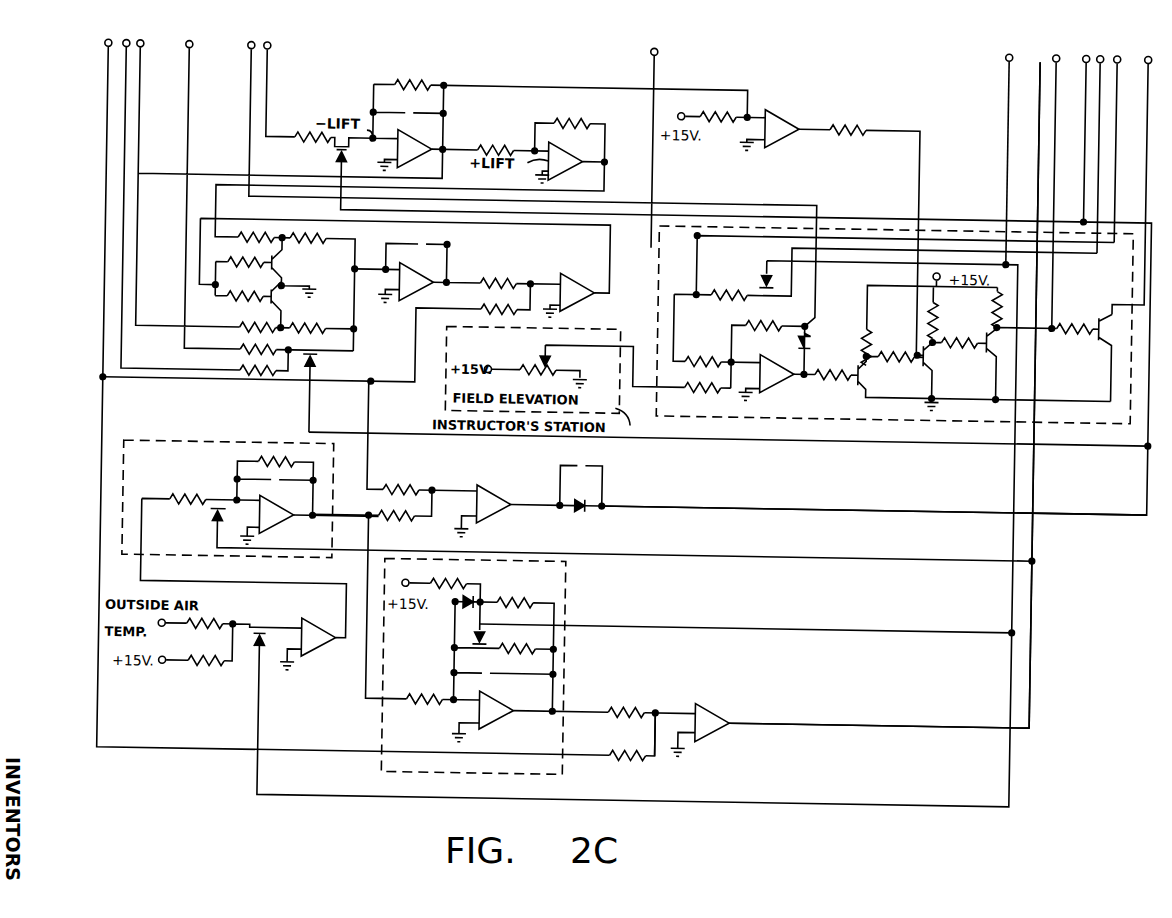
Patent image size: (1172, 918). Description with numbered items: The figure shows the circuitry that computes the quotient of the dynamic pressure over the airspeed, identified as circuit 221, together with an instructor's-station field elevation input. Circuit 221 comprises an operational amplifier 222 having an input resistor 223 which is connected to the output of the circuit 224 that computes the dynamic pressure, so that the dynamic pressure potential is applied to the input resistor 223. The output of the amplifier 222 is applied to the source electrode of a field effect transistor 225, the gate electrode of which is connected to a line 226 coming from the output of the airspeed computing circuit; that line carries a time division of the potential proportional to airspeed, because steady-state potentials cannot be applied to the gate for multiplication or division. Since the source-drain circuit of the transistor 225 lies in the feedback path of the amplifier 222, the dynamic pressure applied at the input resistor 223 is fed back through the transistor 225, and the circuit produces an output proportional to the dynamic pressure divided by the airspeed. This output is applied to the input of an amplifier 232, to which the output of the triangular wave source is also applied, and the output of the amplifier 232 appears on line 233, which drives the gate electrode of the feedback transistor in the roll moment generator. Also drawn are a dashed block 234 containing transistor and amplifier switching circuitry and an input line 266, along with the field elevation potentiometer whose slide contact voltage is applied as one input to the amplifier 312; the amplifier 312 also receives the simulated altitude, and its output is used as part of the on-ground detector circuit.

The dynamic pressure over airspeed computing circuit 221 is at (561, 588).
The operational amplifier 222 is at (492, 714).
The input resistor 223 is at (430, 695).
The dynamic pressure computing circuit 224 is at (198, 462).
The field effect transistor 225 is at (468, 651).
The line 226 is at (908, 626).
The amplifier 232 is at (718, 722).
The line 233 is at (1034, 86).
The switching circuit block 234 is at (853, 408).
The input line 266 is at (1003, 77).
The amplifier 312 is at (768, 378).